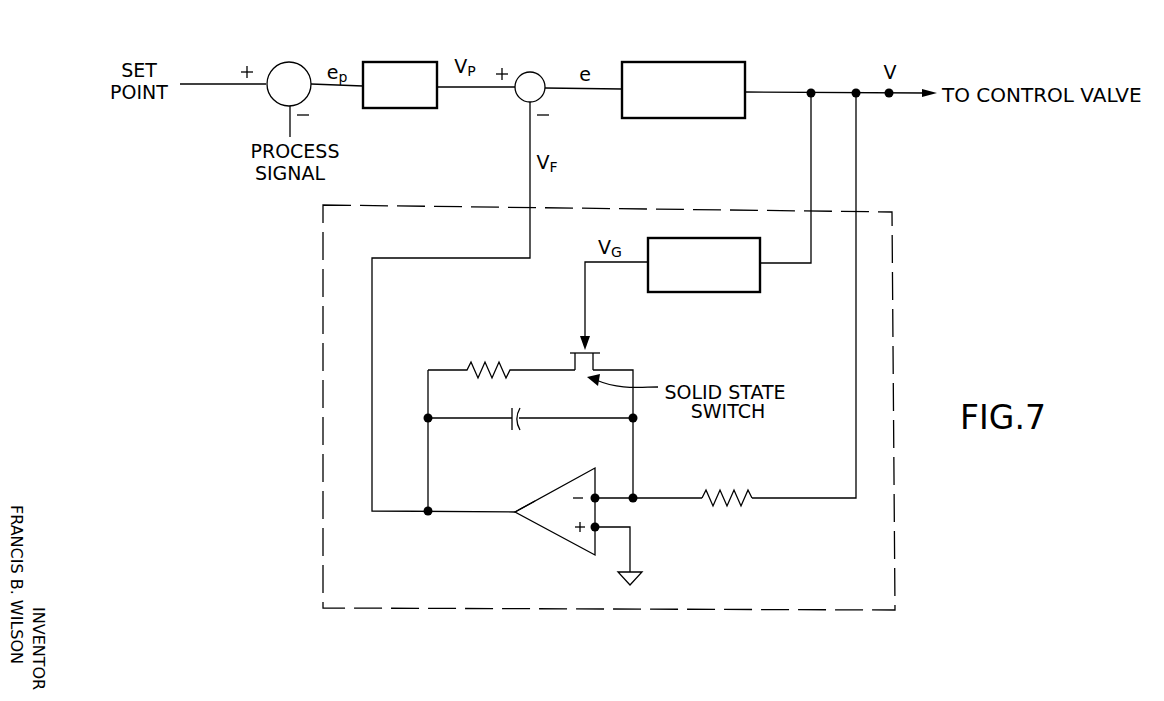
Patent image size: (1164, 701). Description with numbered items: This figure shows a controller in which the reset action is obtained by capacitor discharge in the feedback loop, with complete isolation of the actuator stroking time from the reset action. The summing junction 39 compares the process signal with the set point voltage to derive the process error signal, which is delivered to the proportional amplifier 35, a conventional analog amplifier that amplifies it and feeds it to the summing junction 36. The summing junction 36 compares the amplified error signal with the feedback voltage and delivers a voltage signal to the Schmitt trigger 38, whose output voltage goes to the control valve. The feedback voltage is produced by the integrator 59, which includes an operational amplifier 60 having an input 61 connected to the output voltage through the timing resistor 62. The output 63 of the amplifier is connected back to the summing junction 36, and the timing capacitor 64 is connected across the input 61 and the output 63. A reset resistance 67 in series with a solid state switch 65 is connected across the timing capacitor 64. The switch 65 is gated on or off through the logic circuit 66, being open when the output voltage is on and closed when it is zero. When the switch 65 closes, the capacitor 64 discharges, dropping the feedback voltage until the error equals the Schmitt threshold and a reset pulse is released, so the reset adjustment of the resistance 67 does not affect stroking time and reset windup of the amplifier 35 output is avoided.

The proportional amplifier 35 is at (407, 62).
The summing junction 36 is at (536, 72).
The Schmitt trigger 38 is at (744, 70).
The summing junction 39 is at (293, 63).
The integrator 59 is at (905, 316).
The operational amplifier 60 is at (557, 528).
The input 61 is at (606, 492).
The timing resistor 62 is at (727, 493).
The output 63 is at (515, 514).
The timing capacitor 64 is at (517, 432).
The solid state switch 65 is at (595, 352).
The logic circuit 66 is at (753, 284).
The reset resistance 67 is at (467, 367).